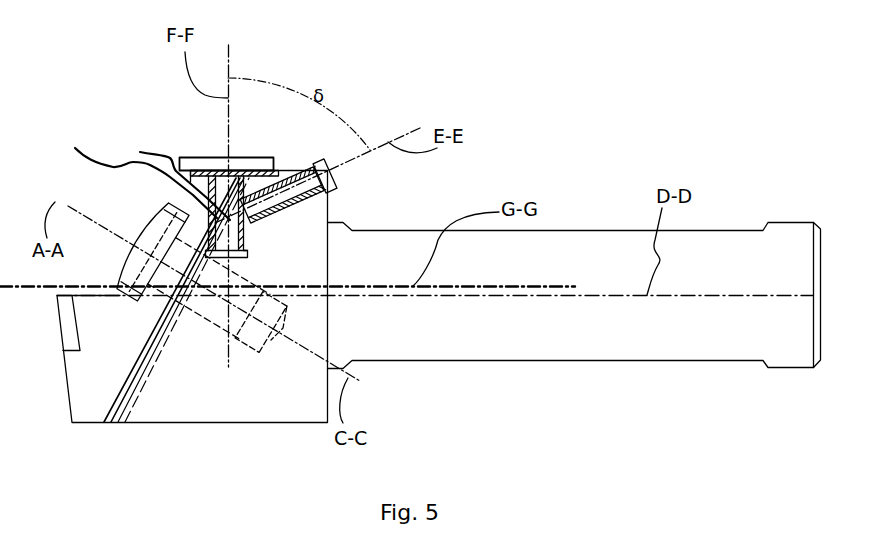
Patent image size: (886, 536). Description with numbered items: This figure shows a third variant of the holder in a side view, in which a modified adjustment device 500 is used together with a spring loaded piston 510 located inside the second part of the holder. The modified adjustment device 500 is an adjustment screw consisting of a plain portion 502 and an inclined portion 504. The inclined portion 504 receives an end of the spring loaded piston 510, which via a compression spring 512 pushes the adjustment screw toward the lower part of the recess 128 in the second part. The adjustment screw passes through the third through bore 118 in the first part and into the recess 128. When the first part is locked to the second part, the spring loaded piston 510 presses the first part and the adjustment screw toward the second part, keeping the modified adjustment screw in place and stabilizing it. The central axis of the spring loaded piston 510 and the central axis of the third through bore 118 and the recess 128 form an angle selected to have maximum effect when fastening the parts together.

The third through bore 118 is at (134, 171).
The plain portion 502 is at (167, 178).
The inclined portion 504 is at (217, 223).
The modified adjustment device 500 is at (212, 167).
The spring loaded piston 510 is at (302, 168).
The compression spring 512 is at (298, 206).
The recess 128 is at (247, 250).